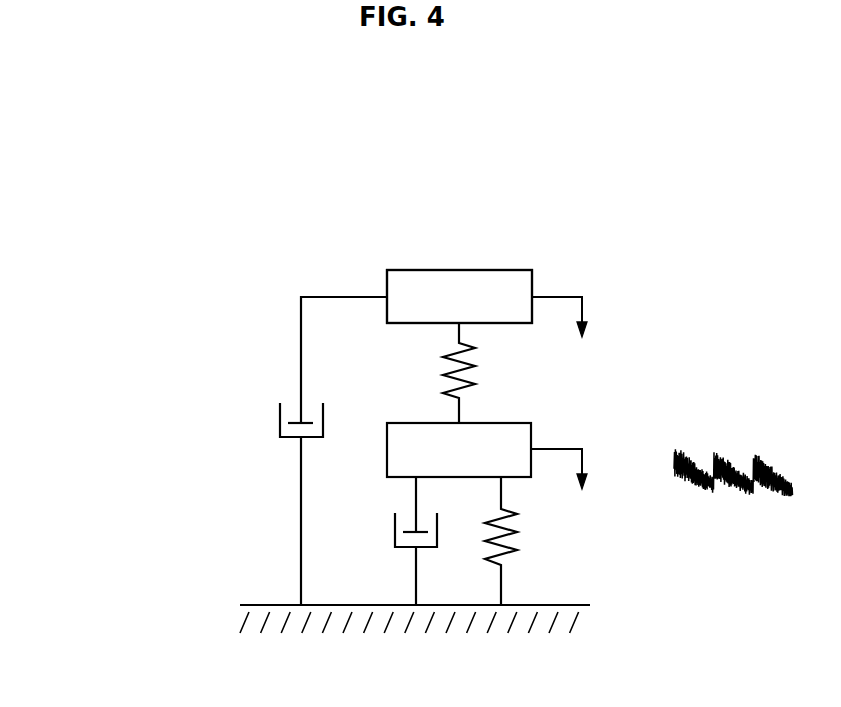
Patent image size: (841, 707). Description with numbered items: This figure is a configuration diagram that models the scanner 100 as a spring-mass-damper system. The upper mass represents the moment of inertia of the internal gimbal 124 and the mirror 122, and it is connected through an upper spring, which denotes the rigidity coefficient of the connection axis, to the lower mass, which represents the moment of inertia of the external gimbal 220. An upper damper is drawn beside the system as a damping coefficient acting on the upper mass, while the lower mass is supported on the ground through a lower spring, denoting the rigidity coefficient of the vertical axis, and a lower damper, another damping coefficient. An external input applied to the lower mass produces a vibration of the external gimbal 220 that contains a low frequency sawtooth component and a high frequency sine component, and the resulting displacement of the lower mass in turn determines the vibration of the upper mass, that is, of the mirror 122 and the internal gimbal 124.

The scanner 100 is at (66, 149).
The mirror 122 is at (532, 270).
The internal gimbal 124 is at (625, 242).
The external gimbal 220 is at (531, 423).